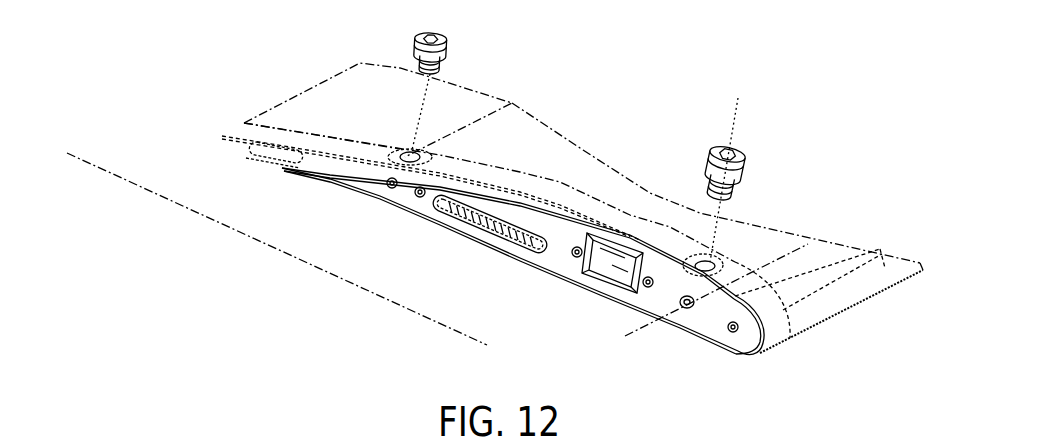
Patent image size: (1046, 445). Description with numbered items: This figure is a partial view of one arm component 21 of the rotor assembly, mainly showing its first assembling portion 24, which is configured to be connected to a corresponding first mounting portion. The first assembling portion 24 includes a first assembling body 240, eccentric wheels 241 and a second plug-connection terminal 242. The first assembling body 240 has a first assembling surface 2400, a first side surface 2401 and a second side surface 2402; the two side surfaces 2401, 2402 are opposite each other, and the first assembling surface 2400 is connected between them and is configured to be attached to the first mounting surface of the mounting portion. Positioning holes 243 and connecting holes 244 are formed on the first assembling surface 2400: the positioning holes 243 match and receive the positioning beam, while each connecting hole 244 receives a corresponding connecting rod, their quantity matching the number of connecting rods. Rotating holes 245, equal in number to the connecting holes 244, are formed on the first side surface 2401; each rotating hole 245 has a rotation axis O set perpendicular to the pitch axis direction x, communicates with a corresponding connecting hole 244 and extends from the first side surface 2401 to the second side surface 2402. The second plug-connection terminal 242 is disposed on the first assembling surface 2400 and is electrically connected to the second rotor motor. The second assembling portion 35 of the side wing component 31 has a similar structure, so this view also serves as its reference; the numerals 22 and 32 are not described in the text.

The arm component 21 is at (495, 176).
The side wing component 31 is at (770, 23).
The wing skin 22 is at (461, 155).
The wing skin 32 is at (330, 92).
The first assembling portion 24 is at (483, 261).
The second assembling portion 35 is at (483, 261).
The first assembling body 240 is at (358, 164).
The first assembling surface 2400 is at (211, 146).
The first side surface 2401 is at (242, 124).
The second side surface 2402 is at (233, 157).
The eccentric wheels 241 is at (707, 162).
The second plug-connection terminal 242 is at (428, 218).
The positioning holes 243 is at (388, 183).
The connecting holes 244 is at (683, 305).
The rotating holes 245 is at (411, 156).
The rotation axis O is at (735, 117).
The pitch axis direction x is at (826, 235).